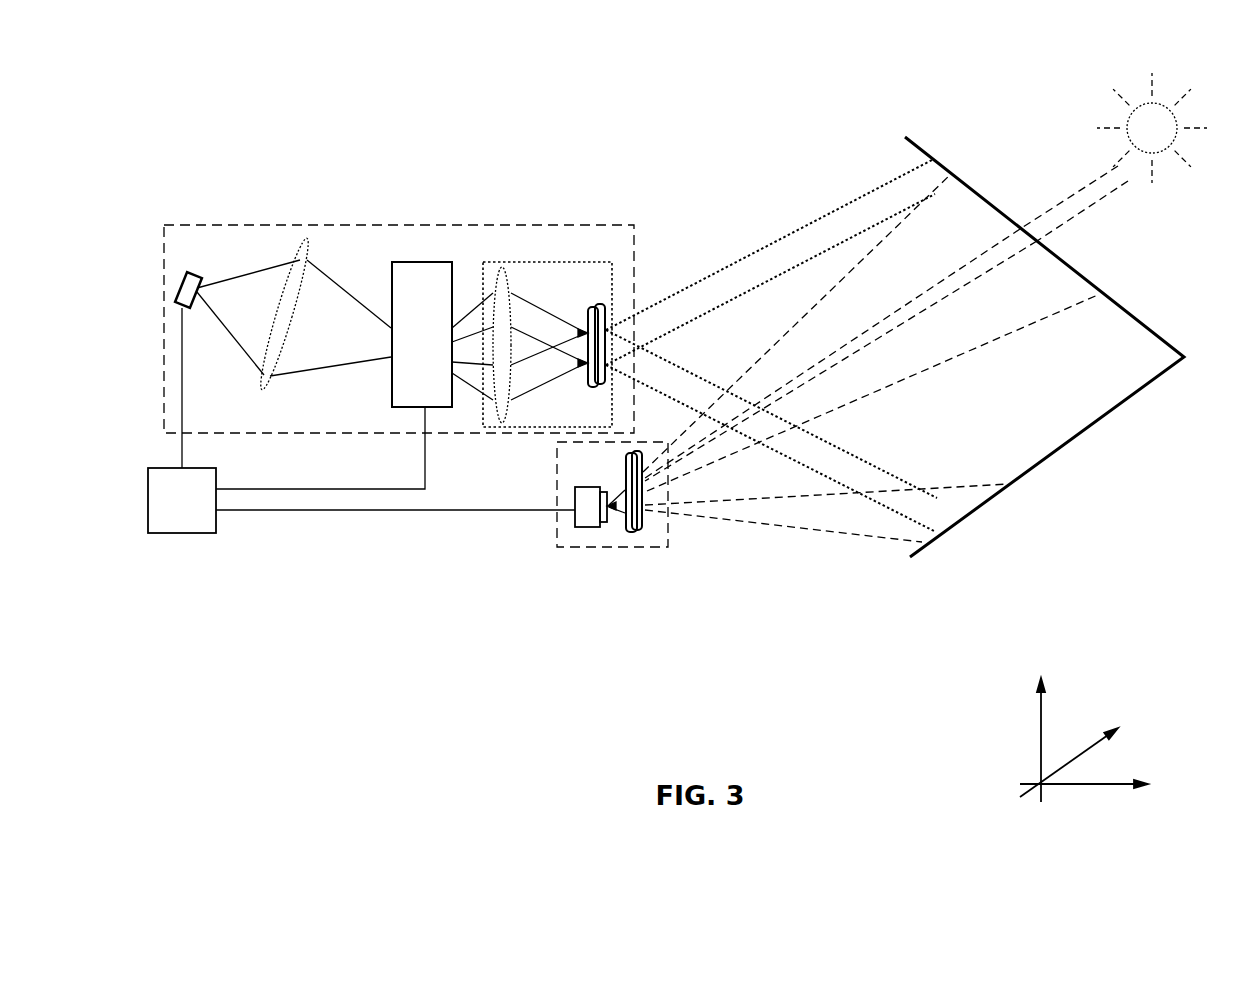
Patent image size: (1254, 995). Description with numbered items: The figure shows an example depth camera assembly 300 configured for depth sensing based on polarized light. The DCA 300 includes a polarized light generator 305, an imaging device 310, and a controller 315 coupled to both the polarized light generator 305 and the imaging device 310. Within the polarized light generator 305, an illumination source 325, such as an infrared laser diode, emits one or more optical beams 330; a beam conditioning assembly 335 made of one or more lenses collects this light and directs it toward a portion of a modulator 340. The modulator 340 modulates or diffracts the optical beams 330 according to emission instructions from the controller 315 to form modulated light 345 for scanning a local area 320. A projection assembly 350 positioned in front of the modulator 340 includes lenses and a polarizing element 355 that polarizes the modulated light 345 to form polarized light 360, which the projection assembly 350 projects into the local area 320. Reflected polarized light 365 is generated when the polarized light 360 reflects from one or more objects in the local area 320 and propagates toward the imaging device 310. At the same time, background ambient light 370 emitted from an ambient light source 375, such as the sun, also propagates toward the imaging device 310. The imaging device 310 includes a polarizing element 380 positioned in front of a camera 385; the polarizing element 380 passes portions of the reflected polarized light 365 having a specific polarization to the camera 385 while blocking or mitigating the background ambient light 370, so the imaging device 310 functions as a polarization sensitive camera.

The depth camera assembly 300 is at (675, 426).
The polarized light generator 305 is at (480, 222).
The imaging device 310 is at (652, 547).
The controller 315 is at (197, 533).
The local area 320 is at (1025, 475).
The illumination source 325 is at (190, 270).
The optical beams 330 is at (262, 270).
The beam conditioning assembly 335 is at (265, 392).
The modulator 340 is at (425, 262).
The modulated light 345 is at (475, 387).
The projection assembly 350 is at (565, 262).
The polarizing element 355 is at (603, 305).
The polarized light 360 is at (733, 262).
The reflected polarized light 365 is at (728, 456).
The background ambient light 370 is at (1090, 179).
The ambient light source 375 is at (1130, 85).
The polarizing element 380 is at (628, 532).
The camera 385 is at (580, 527).